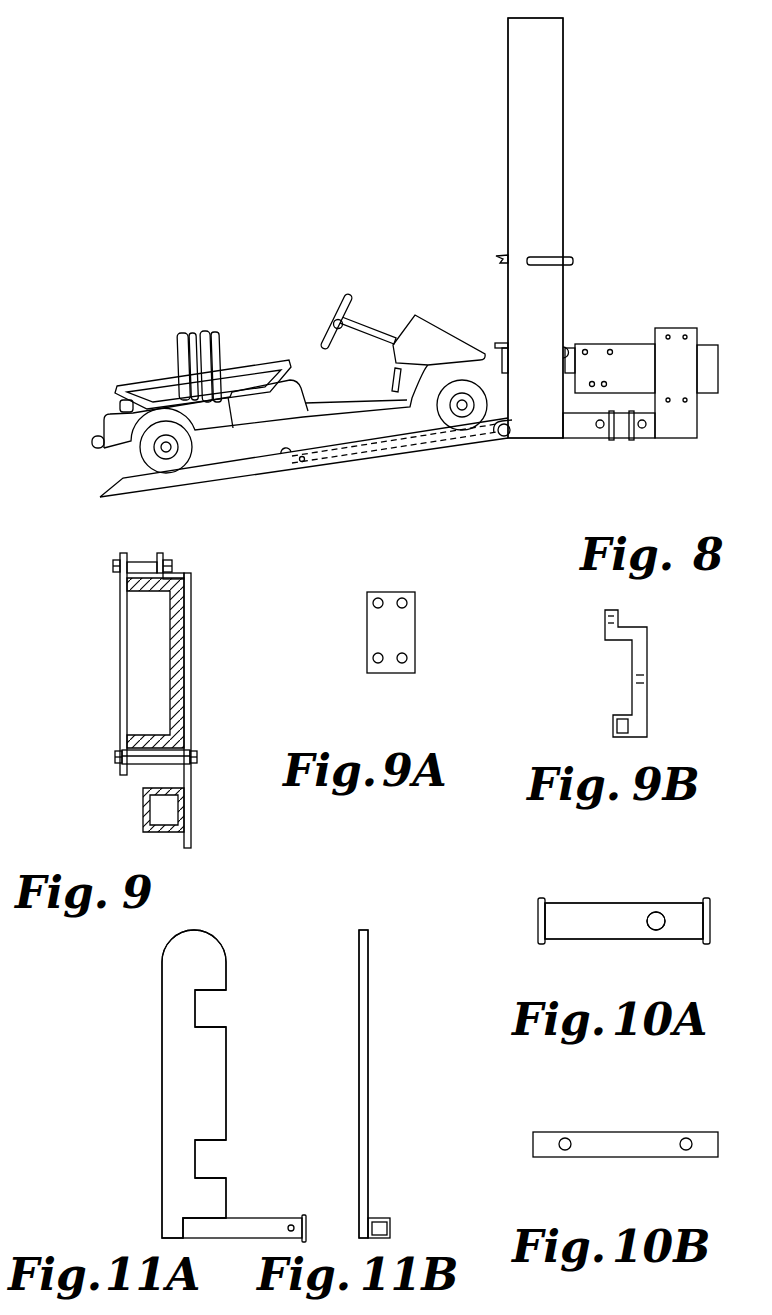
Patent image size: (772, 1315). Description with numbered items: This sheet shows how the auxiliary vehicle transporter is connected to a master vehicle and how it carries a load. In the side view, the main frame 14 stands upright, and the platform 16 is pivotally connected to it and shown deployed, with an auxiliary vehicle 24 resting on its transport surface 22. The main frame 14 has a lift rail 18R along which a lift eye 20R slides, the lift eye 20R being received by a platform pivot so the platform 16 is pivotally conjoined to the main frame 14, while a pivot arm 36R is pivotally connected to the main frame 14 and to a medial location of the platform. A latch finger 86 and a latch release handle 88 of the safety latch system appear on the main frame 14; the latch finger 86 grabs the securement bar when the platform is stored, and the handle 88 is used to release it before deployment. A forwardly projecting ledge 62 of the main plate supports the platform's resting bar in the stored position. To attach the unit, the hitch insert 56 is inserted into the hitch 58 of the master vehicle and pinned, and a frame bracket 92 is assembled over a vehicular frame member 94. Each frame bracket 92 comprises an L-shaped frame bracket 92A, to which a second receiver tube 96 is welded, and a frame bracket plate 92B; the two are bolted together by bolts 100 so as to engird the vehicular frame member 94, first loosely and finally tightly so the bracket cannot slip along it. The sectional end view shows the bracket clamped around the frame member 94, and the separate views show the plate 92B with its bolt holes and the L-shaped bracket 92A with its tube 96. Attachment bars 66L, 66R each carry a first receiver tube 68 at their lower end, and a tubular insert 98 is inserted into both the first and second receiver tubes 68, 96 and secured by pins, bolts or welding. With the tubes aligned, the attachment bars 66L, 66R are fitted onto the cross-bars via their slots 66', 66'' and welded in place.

In FIG. 8, the main frame 14 is at (575, 131).
In FIG. 8, the platform 16 is at (248, 480).
In FIG. 8, the lift rail 18R is at (563, 175).
In FIG. 8, the lift eye 20R is at (504, 440).
In FIG. 8, the transport surface 22 is at (289, 460).
In FIG. 8, the auxiliary vehicle 24 is at (345, 277).
In FIG. 8, the pivot arm 36R is at (389, 458).
In FIG. 8, the hitch insert 56 is at (567, 375).
In FIG. 8, the hitch 58 is at (569, 349).
In FIG. 8, the ledge 62 is at (500, 343).
In FIG. 11A, the attachment bar 66L is at (284, 1053).
In FIG. 11B, the attachment bar 66L is at (368, 1052).
In FIG. 11A, the attachment bar 66R is at (194, 1084).
In FIG. 11B, the attachment bar 66R is at (363, 1084).
In FIG. 11A, the slot 66' is at (243, 986).
In FIG. 11A, the slot 66'' is at (256, 1143).
In FIG. 8, the first receiver tube 68 is at (590, 440).
In FIG. 10A, the first receiver tube 68 is at (641, 940).
In FIG. 11A, the first receiver tube 68 is at (265, 1218).
In FIG. 11B, the first receiver tube 68 is at (390, 1218).
In FIG. 8, the latch finger 86 is at (500, 257).
In FIG. 8, the latch release handle 88 is at (555, 258).
In FIG. 8, the frame bracket 92 is at (684, 327).
In FIG. 9, the frame bracket 92 is at (164, 679).
In FIG. 9A, the frame bracket 92 is at (393, 628).
In FIG. 9B, the frame bracket 92 is at (630, 667).
In FIG. 9, the L-shaped frame bracket 92A is at (192, 665).
In FIG. 9B, the L-shaped frame bracket 92A is at (649, 640).
In FIG. 9, the frame bracket plate 92B is at (120, 630).
In FIG. 9A, the frame bracket plate 92B is at (367, 640).
In FIG. 8, the vehicular frame member 94 is at (638, 344).
In FIG. 9, the vehicular frame member 94 is at (188, 627).
In FIG. 8, the second receiver tube 96 is at (647, 440).
In FIG. 9, the second receiver tube 96 is at (143, 824).
In FIG. 9B, the second receiver tube 96 is at (614, 716).
In FIG. 10A, the second receiver tube 96 is at (624, 921).
In FIG. 8, the tubular insert 98 is at (621, 440).
In FIG. 10B, the tubular insert 98 is at (645, 1131).
In FIG. 9, the bolt 100 is at (138, 556).